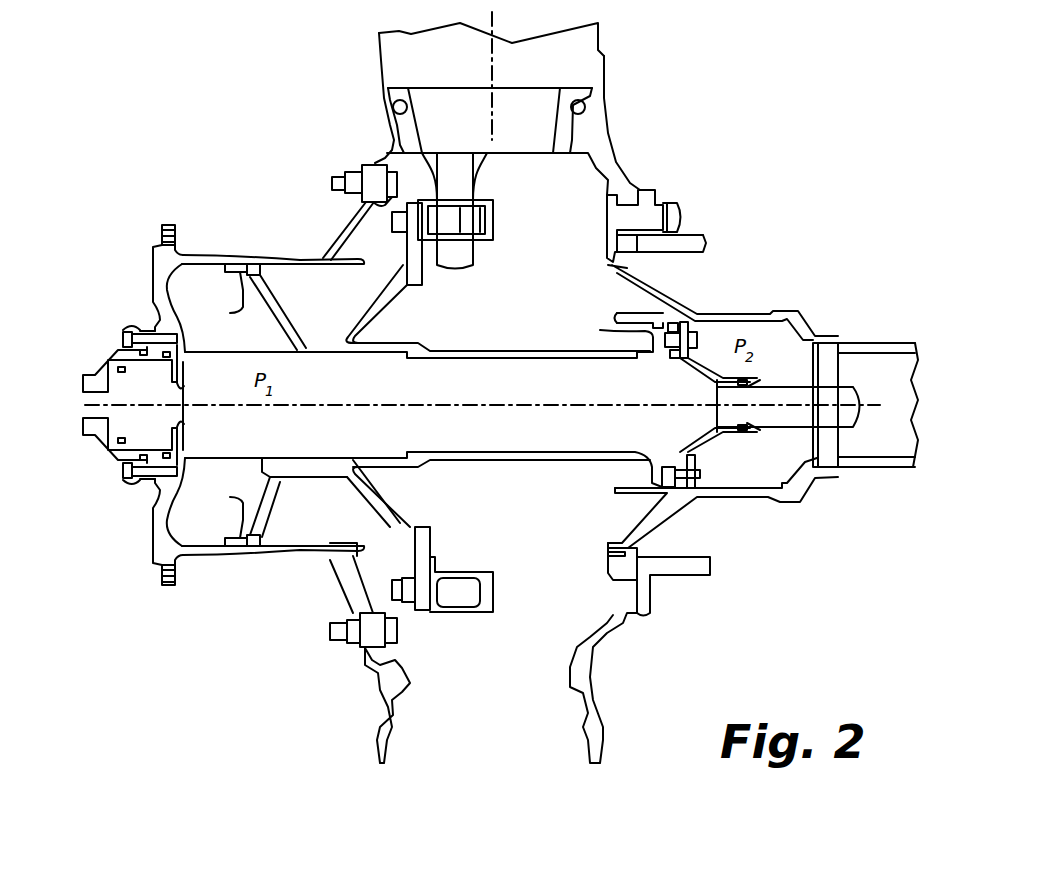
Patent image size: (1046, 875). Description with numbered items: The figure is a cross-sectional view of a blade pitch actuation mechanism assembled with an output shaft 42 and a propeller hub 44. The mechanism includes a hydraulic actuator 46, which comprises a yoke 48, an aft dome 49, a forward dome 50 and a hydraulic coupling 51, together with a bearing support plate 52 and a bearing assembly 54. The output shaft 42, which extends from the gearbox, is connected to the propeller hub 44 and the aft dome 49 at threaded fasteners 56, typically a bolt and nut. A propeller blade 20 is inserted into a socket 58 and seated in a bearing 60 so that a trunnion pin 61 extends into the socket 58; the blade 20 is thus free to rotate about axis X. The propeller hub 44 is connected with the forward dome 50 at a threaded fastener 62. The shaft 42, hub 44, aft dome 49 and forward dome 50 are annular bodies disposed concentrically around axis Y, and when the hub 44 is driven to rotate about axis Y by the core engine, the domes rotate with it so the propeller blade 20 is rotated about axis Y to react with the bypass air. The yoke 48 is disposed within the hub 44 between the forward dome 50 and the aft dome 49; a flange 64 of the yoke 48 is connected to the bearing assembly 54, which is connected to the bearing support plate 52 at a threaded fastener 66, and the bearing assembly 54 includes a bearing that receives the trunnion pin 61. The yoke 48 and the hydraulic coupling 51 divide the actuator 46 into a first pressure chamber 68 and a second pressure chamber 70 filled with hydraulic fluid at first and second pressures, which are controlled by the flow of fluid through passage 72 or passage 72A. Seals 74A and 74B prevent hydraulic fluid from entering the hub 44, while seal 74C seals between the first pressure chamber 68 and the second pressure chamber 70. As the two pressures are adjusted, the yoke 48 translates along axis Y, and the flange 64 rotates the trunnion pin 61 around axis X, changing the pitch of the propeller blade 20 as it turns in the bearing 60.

The propeller blade 20 is at (583, 48).
The output shaft 42 is at (690, 256).
The propeller hub 44 is at (617, 158).
The hydraulic actuator 46 is at (697, 303).
The yoke 48 is at (370, 303).
The aft dome 49 is at (620, 287).
The forward dome 50 is at (280, 258).
The hydraulic coupling 51 is at (690, 366).
The bearing support plate 52 is at (425, 284).
The bearing assembly 54 is at (497, 202).
The threaded fasteners 56 is at (636, 223).
The socket 58 is at (380, 96).
The bearing 60 is at (603, 82).
The trunnion pin 61 is at (462, 264).
The threaded fastener 62 is at (350, 160).
The flange 64 is at (348, 232).
The threaded fastener 66 is at (360, 212).
The first pressure chamber 68 is at (368, 381).
The second pressure chamber 70 is at (805, 370).
The passage 72 is at (878, 369).
The passage 72A is at (872, 347).
The seal 74A is at (232, 313).
The seal 74B is at (647, 330).
The seal 74C is at (745, 392).